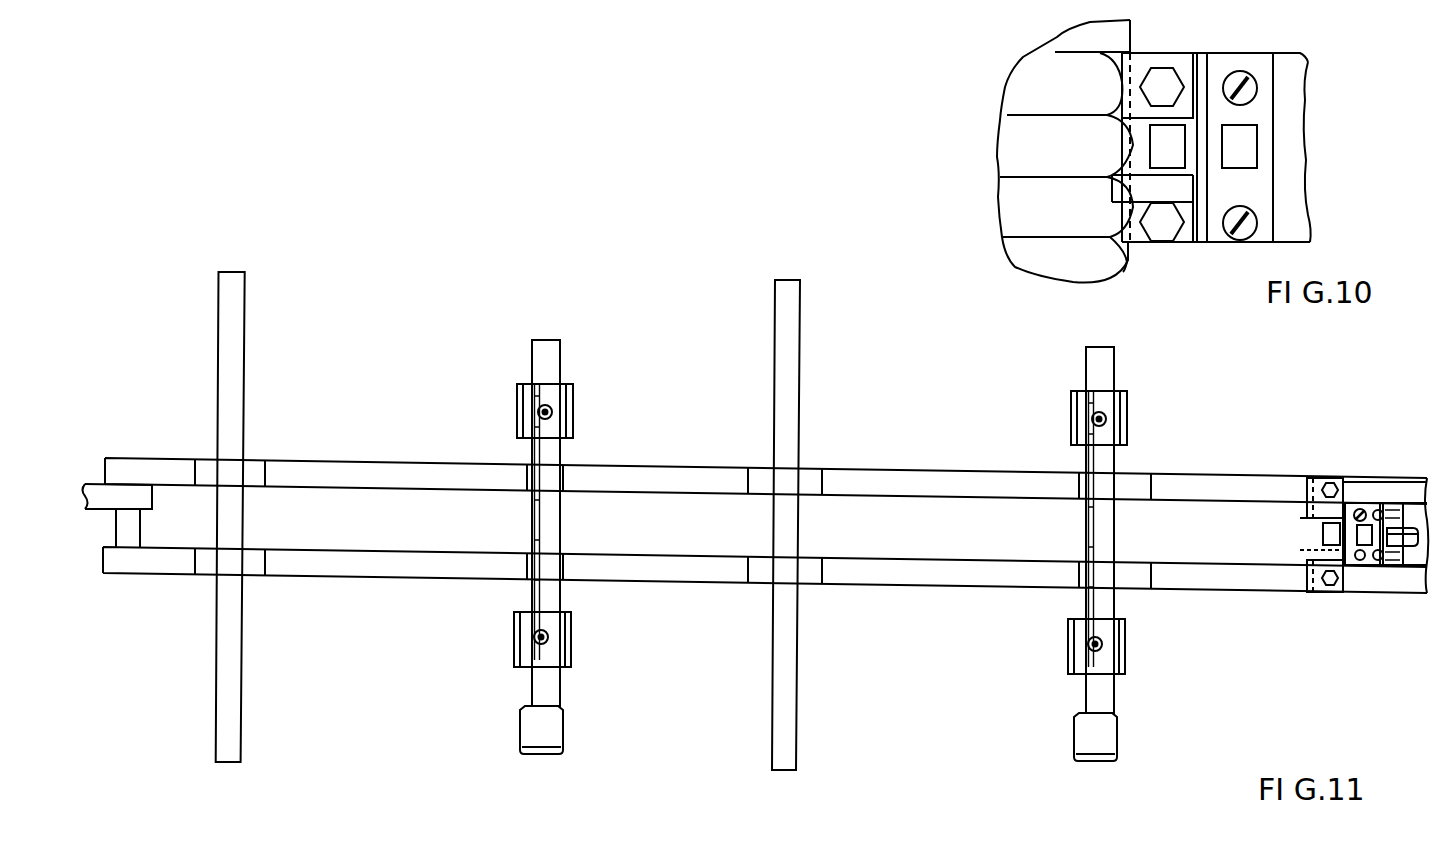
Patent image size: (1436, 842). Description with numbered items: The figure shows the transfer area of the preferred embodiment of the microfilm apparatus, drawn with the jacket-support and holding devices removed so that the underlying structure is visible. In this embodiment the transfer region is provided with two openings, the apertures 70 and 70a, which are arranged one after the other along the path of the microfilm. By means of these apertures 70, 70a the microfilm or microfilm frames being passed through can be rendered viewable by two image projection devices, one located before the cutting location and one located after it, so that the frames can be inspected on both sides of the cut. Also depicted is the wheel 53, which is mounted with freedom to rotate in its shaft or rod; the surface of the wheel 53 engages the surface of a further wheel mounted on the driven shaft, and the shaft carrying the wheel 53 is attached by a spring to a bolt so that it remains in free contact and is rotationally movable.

In FIG. 11, the wheel 53 is at (1400, 535).
In FIG. 10, the aperture 70 is at (1172, 140).
In FIG. 11, the aperture 70 is at (1332, 525).
In FIG. 10, the aperture 70a is at (1245, 140).
In FIG. 11, the aperture 70a is at (1366, 532).